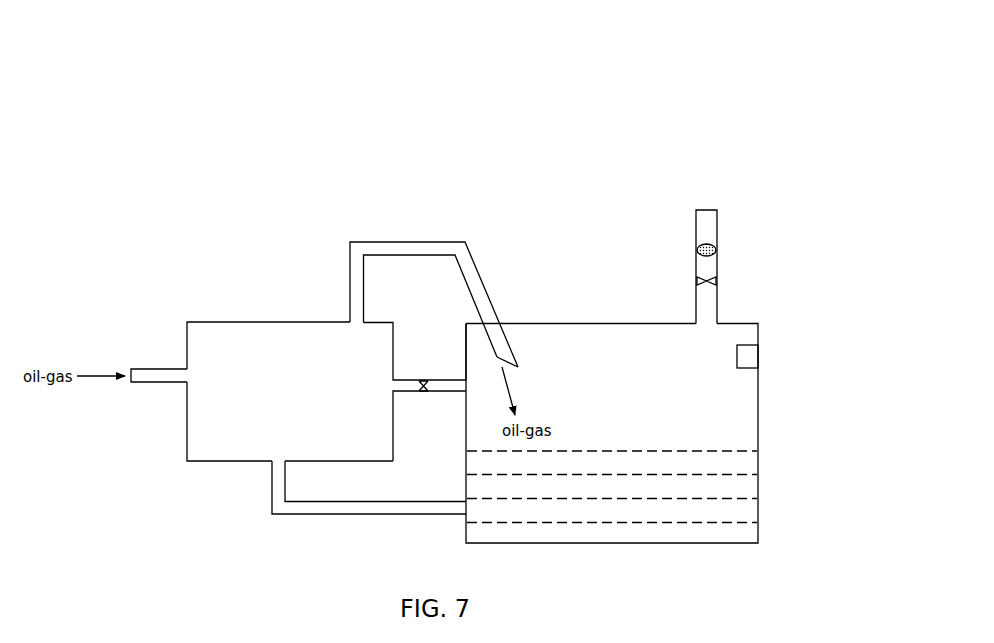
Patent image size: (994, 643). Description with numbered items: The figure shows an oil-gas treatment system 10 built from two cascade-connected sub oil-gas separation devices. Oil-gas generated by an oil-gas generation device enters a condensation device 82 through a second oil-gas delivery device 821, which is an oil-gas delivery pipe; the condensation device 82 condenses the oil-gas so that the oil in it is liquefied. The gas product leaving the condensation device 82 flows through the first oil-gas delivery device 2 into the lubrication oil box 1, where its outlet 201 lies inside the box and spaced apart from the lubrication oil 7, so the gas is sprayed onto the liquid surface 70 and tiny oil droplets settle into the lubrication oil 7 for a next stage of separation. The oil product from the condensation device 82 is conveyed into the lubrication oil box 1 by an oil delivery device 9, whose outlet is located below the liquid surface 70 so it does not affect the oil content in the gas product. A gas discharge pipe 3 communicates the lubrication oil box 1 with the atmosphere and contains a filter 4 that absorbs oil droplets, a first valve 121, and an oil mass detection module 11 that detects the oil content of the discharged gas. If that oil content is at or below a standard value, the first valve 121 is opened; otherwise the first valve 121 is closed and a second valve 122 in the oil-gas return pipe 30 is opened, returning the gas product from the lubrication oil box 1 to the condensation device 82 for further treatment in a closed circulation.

The oil-gas treatment system 10 is at (131, 68).
The lubrication oil box 1 is at (743, 405).
The oil mass detection module 11 is at (748, 356).
The first oil-gas delivery device 2 is at (468, 267).
The outlet 201 is at (517, 358).
The gas discharge pipe 3 is at (717, 299).
The filter 4 is at (716, 250).
The first valve 121 is at (697, 281).
The second valve 122 is at (423, 391).
The oil-gas return pipe 30 is at (450, 385).
The lubrication oil 7 is at (705, 474).
The liquid surface 70 is at (710, 451).
The condensation device 82 is at (233, 322).
The second oil-gas delivery device 821 is at (151, 375).
The oil delivery device 9 is at (371, 514).